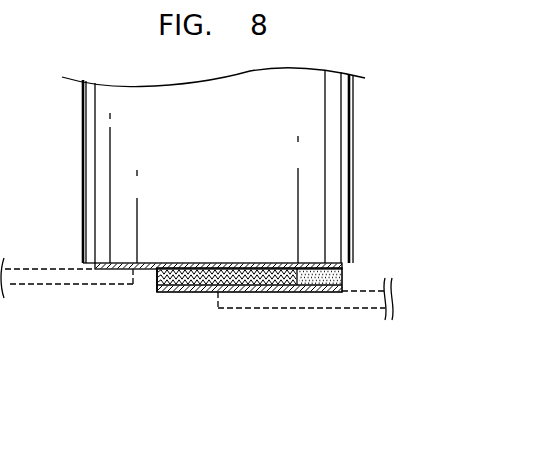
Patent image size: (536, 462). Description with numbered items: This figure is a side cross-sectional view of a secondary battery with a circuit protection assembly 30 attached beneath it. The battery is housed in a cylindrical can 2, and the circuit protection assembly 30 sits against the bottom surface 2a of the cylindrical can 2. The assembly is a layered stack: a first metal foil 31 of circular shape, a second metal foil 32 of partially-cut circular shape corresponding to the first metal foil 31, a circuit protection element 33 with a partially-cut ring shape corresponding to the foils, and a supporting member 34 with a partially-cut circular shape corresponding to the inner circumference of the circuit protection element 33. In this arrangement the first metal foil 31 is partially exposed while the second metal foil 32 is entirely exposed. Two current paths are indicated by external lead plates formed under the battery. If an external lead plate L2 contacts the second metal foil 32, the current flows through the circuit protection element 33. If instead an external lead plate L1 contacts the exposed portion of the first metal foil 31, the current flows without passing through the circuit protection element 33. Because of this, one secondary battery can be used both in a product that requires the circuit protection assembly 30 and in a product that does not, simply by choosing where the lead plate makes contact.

The cylindrical can 2 is at (312, 127).
The bottom surface 2a is at (117, 263).
The circuit protection assembly 30 is at (242, 375).
The first metal foil 31 is at (147, 268).
The second metal foil 32 is at (202, 292).
The circuit protection element 33 is at (300, 291).
The supporting member 34 is at (180, 292).
The external lead plate L1 is at (69, 292).
The external lead plate L2 is at (322, 316).